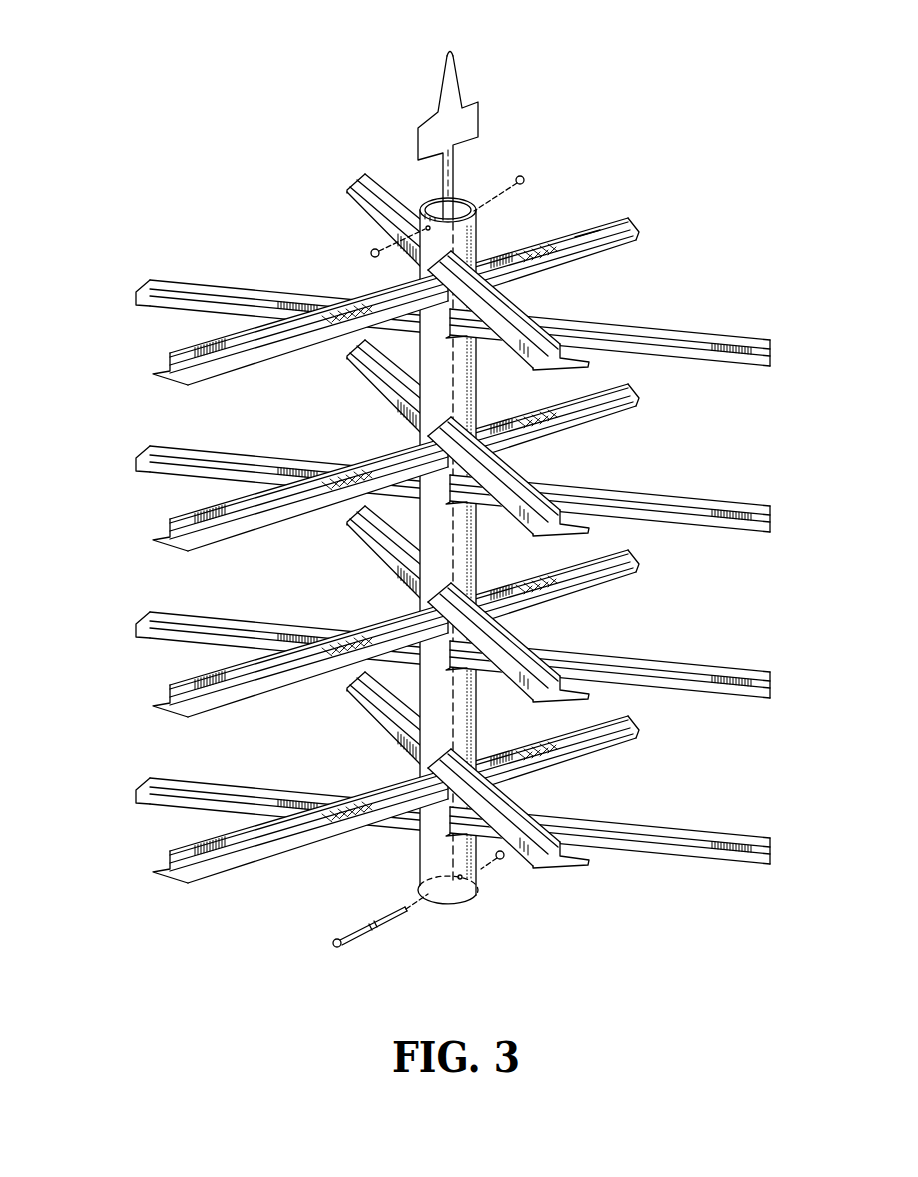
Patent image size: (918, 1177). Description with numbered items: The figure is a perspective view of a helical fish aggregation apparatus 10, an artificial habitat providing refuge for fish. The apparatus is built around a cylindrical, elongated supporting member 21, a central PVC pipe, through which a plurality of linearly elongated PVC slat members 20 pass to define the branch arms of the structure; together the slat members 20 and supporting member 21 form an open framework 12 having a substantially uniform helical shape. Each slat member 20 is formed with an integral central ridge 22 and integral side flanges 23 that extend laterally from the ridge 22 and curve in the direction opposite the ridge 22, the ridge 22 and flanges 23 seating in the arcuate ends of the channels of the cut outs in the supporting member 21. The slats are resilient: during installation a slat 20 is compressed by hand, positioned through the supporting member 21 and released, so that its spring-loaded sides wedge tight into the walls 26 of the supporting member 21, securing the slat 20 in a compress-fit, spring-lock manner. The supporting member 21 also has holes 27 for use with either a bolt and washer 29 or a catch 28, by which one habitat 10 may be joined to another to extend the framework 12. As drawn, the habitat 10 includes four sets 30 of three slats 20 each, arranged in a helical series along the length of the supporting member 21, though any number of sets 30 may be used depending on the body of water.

The helical fish aggregation apparatus 10 is at (303, 130).
The framework 12 is at (107, 251).
The slat member 20 is at (632, 220).
The supporting member 21 is at (484, 234).
The central ridge 22 is at (178, 354).
The side flanges 23 is at (591, 252).
The walls 26 is at (426, 246).
The holes 27 is at (437, 906).
The catch 28 is at (452, 54).
The bolt and washer 29 is at (333, 944).
The set of slats 30 is at (782, 195).